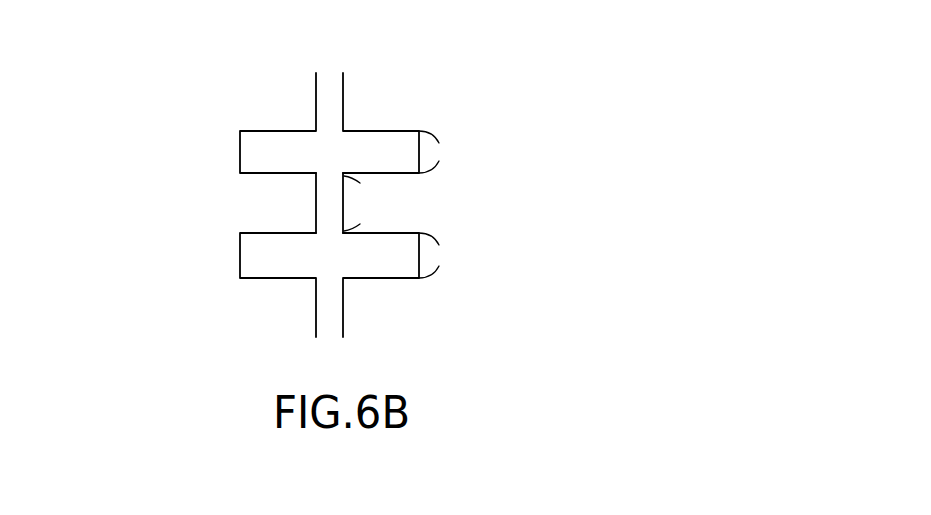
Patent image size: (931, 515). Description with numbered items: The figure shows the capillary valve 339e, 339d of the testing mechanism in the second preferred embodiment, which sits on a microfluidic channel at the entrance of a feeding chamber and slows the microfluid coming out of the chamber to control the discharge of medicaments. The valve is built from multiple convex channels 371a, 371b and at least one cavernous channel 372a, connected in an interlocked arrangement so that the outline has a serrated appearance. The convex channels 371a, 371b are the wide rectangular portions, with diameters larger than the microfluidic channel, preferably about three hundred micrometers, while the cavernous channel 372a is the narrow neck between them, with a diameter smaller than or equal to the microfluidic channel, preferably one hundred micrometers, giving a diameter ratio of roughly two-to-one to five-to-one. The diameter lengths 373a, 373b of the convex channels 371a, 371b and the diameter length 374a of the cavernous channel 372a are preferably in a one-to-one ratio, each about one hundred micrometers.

The capillary valve 339e is at (528, 86).
The capillary valve 339d is at (528, 86).
The convex channel 371a is at (253, 150).
The diameter length 373a is at (421, 123).
The cavernous channel 372a is at (323, 206).
The diameter length 374a is at (383, 203).
The convex channel 371b is at (263, 258).
The diameter length 373b is at (422, 285).